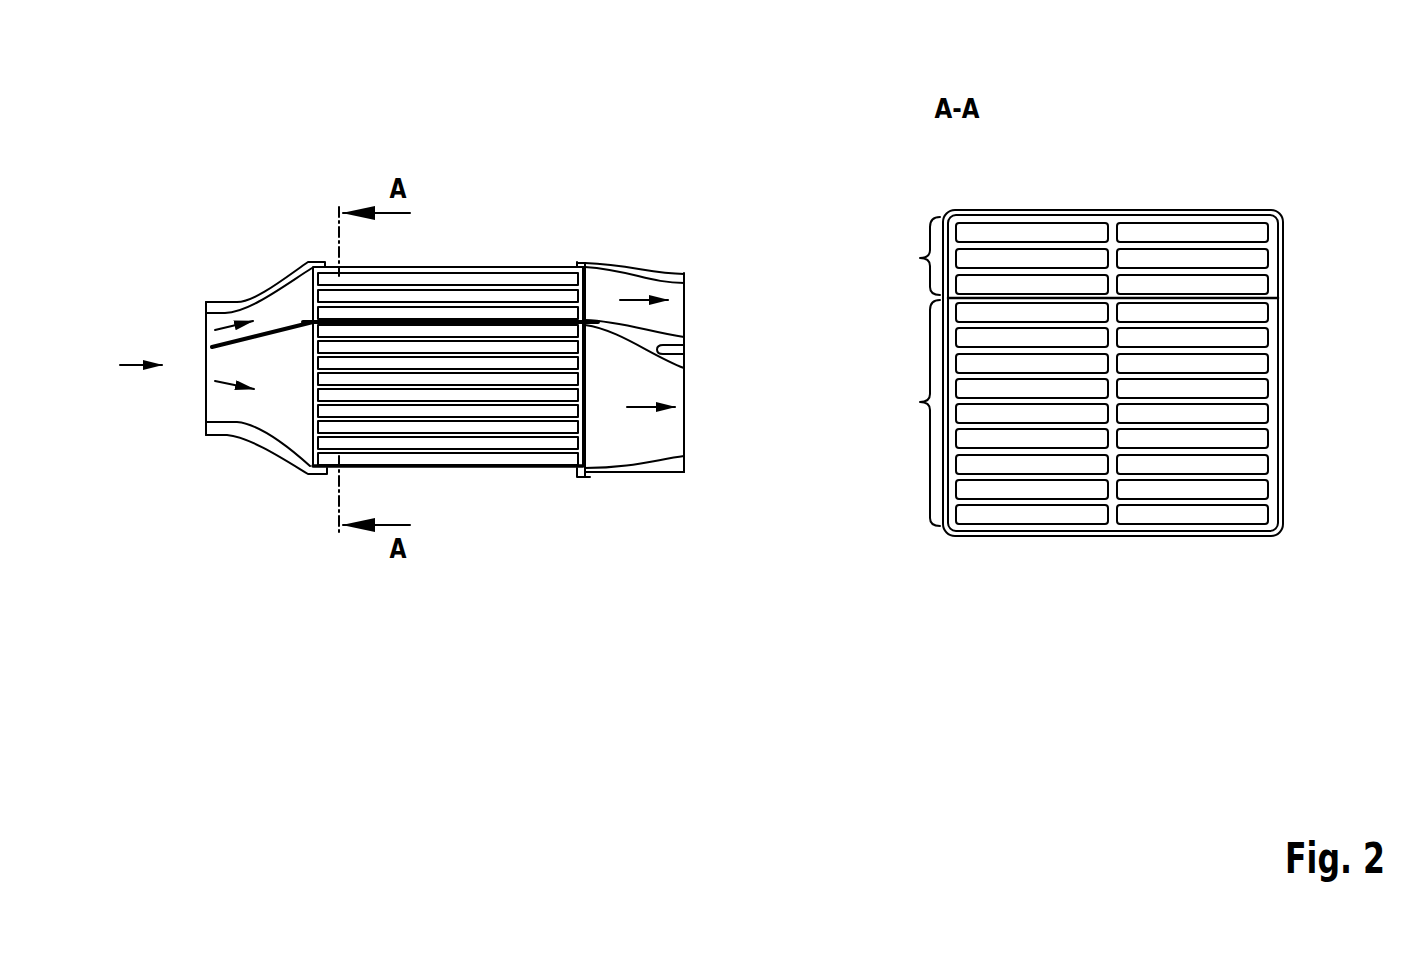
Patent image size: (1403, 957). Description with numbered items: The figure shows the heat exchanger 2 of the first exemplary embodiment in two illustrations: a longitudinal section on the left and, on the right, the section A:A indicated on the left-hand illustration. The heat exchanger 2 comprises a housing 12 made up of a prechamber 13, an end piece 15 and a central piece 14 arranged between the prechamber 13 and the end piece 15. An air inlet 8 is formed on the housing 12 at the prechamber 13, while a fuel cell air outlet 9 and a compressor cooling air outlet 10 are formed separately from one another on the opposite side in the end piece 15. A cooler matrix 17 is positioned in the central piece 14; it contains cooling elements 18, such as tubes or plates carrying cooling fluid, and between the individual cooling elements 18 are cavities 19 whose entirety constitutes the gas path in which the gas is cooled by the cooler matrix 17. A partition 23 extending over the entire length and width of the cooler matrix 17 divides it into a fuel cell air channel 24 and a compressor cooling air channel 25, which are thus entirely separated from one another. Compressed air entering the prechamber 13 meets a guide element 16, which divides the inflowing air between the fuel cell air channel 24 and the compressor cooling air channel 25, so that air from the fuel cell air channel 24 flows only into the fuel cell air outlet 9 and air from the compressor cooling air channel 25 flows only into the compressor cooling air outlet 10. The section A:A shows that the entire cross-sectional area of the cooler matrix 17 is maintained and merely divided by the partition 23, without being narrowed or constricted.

The heat exchanger 2 is at (187, 117).
The air inlet 8 is at (210, 422).
The fuel cell air outlet 9 is at (684, 456).
The compressor cooling air outlet 10 is at (684, 337).
The housing 12 is at (208, 172).
The prechamber 13 is at (270, 288).
The central piece 14 is at (793, 345).
The end piece 15 is at (632, 266).
The guide element 16 is at (215, 343).
The cooler matrix 17 is at (541, 476).
The cooling elements 18 is at (495, 458).
The cavities 19 is at (450, 451).
The partition 23 is at (495, 320).
The fuel cell air channel 24 is at (527, 297).
The compressor cooling air channel 25 is at (522, 268).